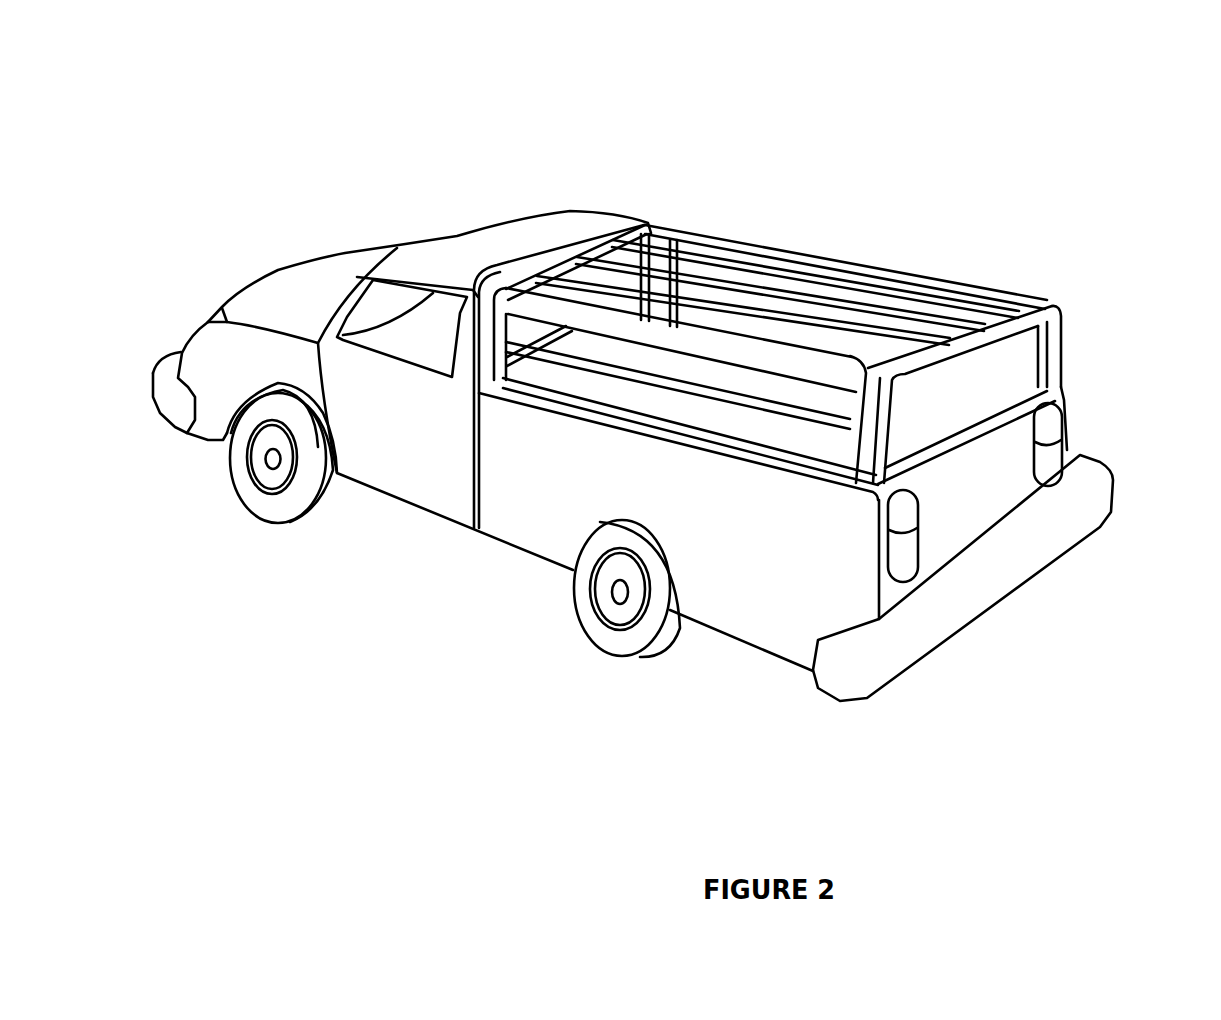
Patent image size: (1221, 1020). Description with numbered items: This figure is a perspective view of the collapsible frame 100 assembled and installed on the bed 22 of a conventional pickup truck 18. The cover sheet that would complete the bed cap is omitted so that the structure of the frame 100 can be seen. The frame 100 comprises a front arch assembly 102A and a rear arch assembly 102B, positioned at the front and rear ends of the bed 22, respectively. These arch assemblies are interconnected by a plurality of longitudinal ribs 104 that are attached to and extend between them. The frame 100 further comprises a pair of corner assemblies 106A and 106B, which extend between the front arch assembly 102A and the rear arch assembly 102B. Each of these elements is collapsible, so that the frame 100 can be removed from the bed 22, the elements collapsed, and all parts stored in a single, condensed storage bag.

The pickup truck 18 is at (508, 237).
The bed 22 is at (925, 417).
The collapsible frame 100 is at (860, 133).
The front arch assembly 102A is at (488, 373).
The rear arch assembly 102B is at (1067, 352).
The longitudinal ribs 104 is at (818, 422).
The corner assembly 106A is at (627, 322).
The corner assembly 106B is at (853, 265).